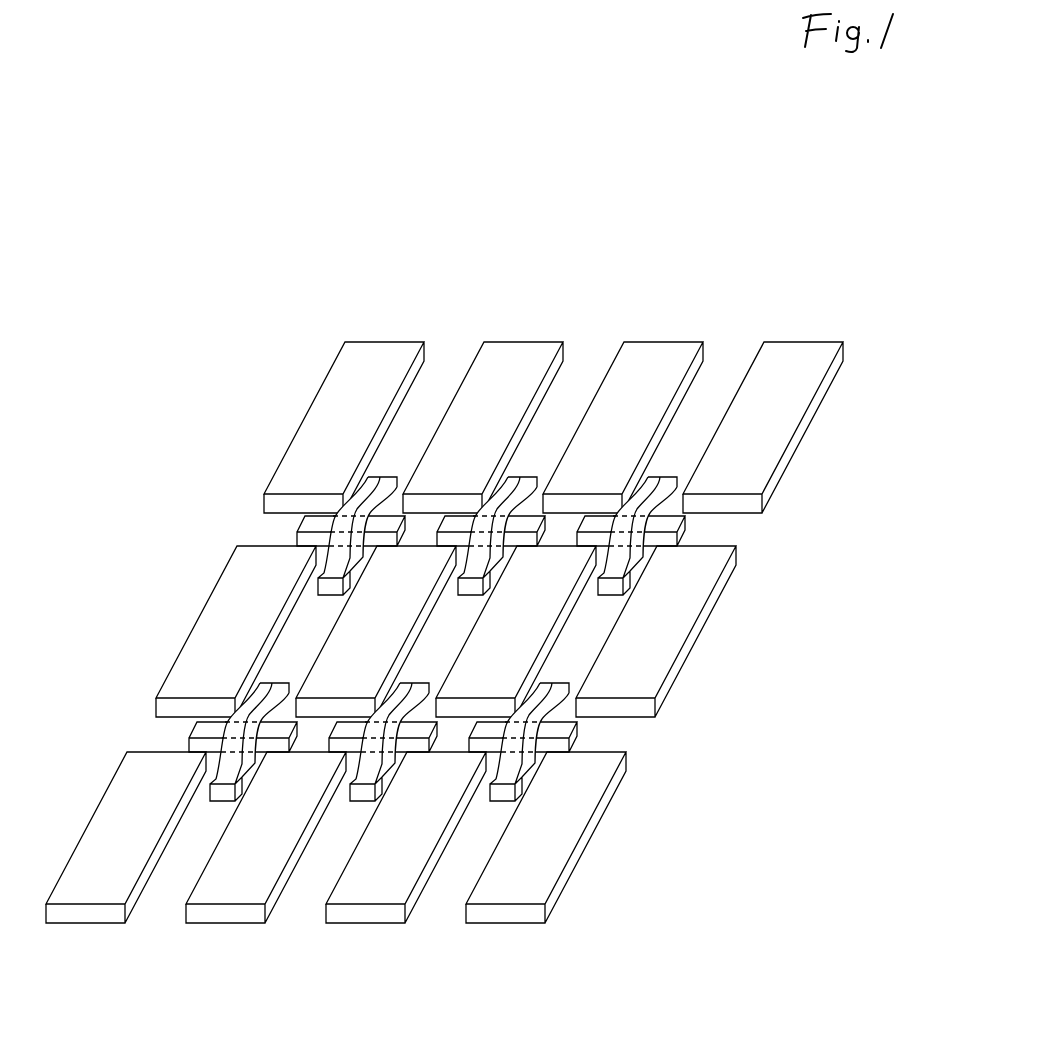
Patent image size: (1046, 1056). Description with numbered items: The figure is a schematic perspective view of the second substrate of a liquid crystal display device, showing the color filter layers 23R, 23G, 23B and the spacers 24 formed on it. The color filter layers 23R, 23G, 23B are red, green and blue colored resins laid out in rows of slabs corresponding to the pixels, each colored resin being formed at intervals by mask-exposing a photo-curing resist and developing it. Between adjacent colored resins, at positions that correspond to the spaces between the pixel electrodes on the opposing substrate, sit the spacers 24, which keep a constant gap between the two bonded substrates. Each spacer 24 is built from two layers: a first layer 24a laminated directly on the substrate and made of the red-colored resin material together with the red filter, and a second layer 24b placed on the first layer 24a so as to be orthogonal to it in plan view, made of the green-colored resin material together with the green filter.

The red color filter layer 23R is at (318, 410).
The green color filter layer 23G is at (513, 357).
The blue color filter layer 23B is at (653, 360).
The spacer 24 is at (474, 647).
The first layer 24a is at (687, 530).
The second layer 24b is at (663, 485).